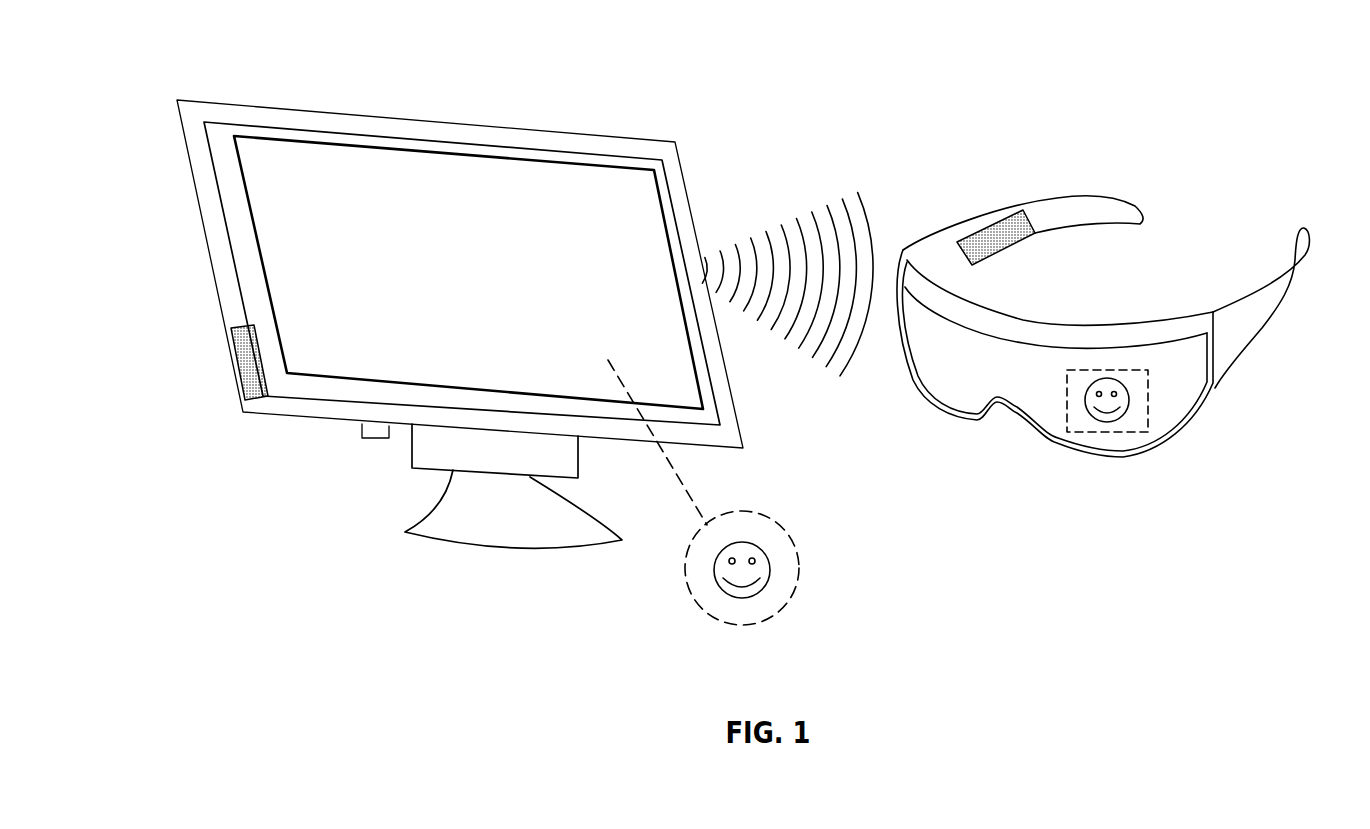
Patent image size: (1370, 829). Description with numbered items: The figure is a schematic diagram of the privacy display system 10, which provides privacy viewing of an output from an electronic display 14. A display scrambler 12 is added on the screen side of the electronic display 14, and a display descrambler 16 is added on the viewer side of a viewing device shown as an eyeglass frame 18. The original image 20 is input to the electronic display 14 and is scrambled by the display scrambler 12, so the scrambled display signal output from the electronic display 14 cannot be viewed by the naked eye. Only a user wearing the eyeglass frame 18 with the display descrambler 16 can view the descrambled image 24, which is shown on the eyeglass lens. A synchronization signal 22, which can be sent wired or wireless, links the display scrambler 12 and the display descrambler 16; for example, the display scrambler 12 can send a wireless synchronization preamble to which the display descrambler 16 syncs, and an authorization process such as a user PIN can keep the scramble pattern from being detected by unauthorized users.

The privacy display system 10 is at (803, 51).
The display scrambler 12 is at (239, 367).
The electronic display 14 is at (403, 117).
The display descrambler 16 is at (1005, 230).
The eyeglass frame 18 is at (1232, 362).
The original image 20 is at (780, 527).
The wireless signal 22 is at (795, 218).
The descrambled image 24 is at (1098, 425).